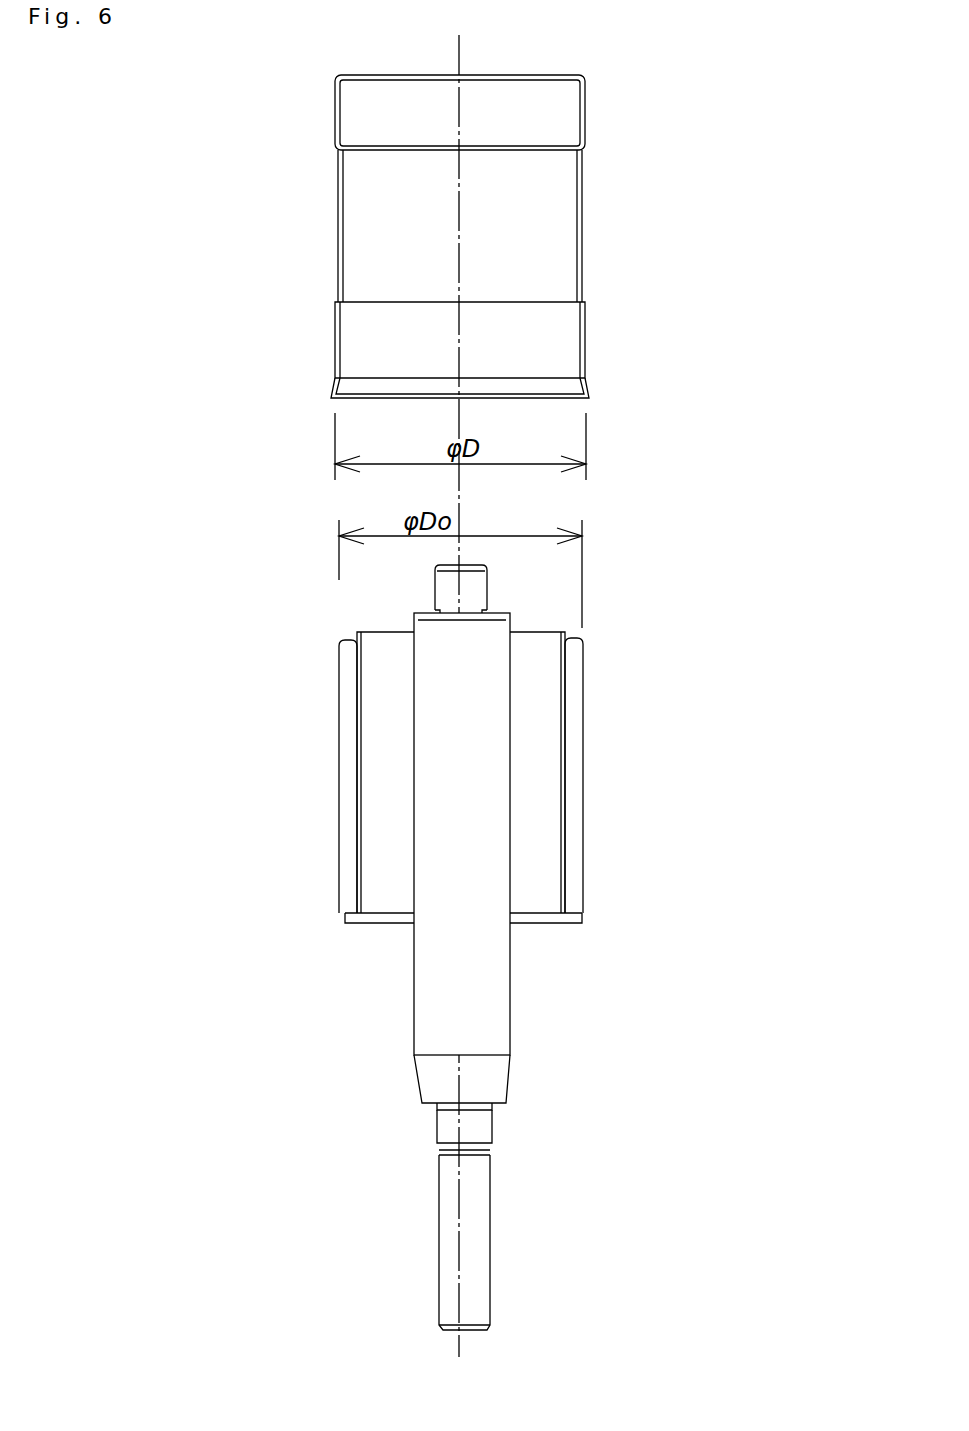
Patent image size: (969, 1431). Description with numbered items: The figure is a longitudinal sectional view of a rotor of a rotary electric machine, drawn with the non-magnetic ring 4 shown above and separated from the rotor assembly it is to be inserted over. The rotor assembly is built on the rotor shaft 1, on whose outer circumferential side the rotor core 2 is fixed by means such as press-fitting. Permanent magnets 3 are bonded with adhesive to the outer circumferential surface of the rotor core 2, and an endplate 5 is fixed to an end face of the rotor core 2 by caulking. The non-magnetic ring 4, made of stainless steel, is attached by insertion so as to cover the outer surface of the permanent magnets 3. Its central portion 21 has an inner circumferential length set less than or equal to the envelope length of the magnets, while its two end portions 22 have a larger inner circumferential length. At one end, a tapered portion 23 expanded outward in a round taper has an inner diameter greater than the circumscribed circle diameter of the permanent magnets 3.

The rotor shaft 1 is at (445, 1010).
The rotor core 2 is at (375, 830).
The magnetic poles (permanent magnets) 3 is at (352, 727).
The non-magnetic ring 4 is at (449, 236).
The endplate 5 is at (537, 923).
The central portion 21 is at (300, 157).
The end portions 22 is at (300, 78).
The tapered portion 23 is at (587, 388).